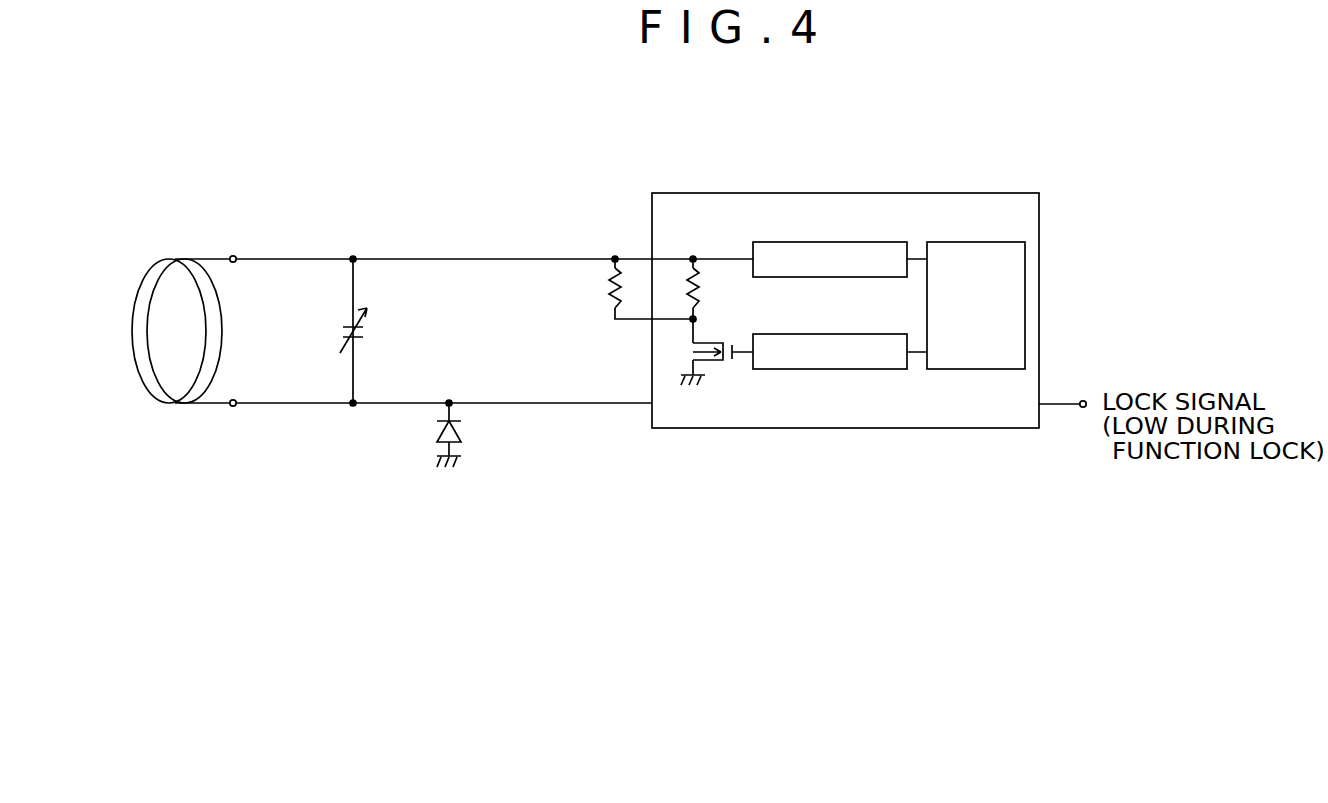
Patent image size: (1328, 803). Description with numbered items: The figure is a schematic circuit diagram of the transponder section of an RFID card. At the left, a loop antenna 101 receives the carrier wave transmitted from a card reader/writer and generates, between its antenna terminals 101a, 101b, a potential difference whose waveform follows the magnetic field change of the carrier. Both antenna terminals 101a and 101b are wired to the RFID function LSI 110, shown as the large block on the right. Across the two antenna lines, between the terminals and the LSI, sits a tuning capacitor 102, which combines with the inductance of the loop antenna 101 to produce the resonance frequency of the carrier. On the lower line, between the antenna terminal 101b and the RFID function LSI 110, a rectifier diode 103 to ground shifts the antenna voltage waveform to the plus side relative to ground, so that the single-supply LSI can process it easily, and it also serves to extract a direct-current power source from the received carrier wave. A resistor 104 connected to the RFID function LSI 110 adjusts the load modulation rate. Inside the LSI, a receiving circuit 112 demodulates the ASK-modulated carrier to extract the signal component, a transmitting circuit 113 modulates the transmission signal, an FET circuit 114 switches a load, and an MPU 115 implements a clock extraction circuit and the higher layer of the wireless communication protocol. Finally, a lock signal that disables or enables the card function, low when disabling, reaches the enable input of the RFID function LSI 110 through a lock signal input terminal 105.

The loop antenna 101 is at (143, 276).
The antenna terminal 101a is at (233, 255).
The antenna terminal 101b is at (233, 407).
The tuning capacitor 102 is at (366, 332).
The rectifier diode 103 is at (461, 432).
The resistor 104 is at (609, 292).
The lock signal input terminal 105 is at (1083, 400).
The RFID function LSI 110 is at (800, 193).
The receiving circuit 112 is at (798, 277).
The transmitting circuit 113 is at (798, 369).
The FET circuit 114 is at (724, 360).
The MPU 115 is at (1025, 303).